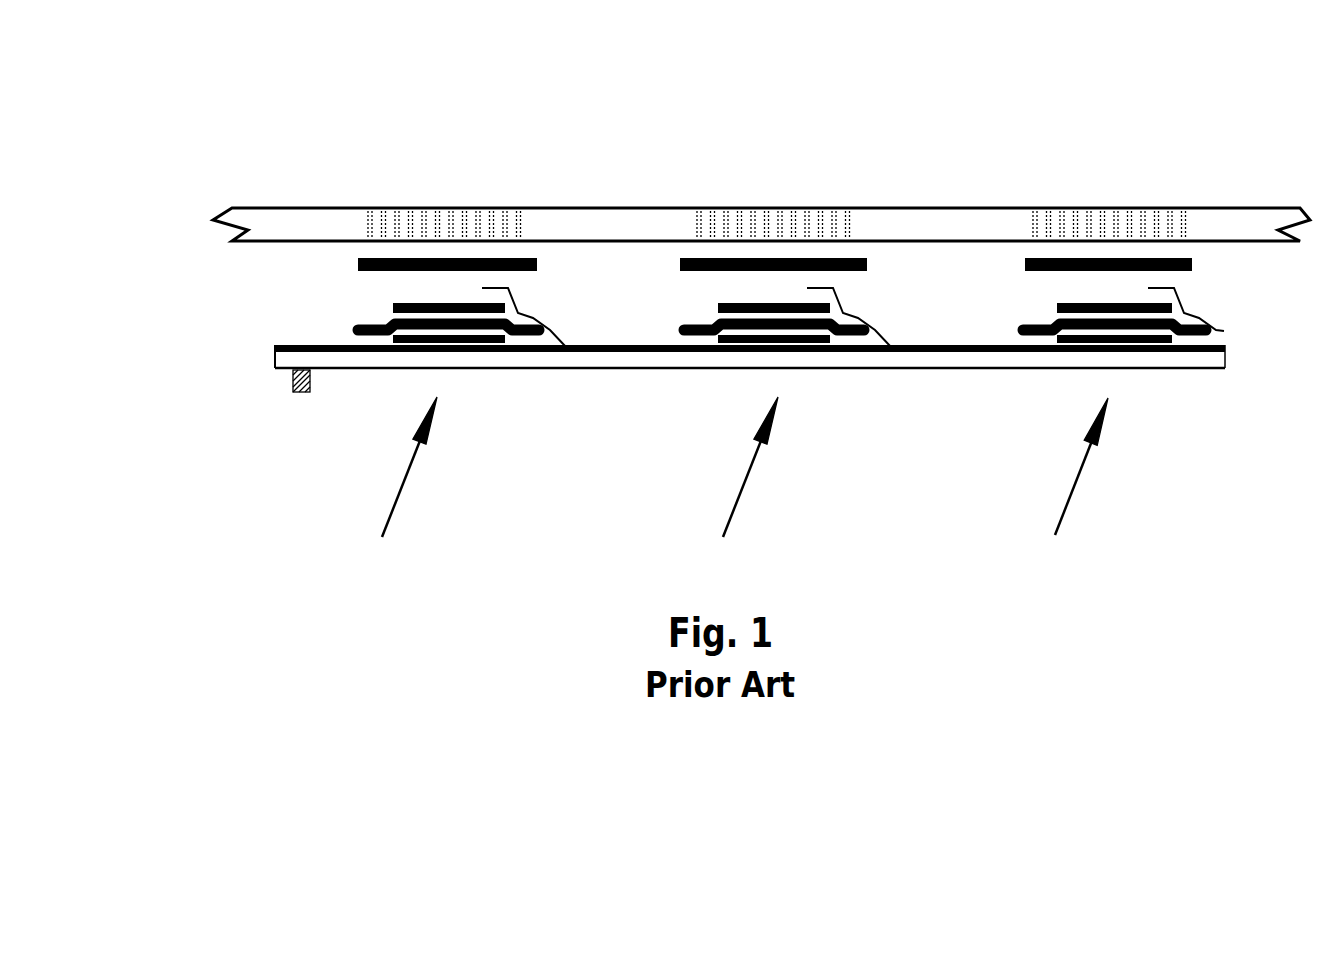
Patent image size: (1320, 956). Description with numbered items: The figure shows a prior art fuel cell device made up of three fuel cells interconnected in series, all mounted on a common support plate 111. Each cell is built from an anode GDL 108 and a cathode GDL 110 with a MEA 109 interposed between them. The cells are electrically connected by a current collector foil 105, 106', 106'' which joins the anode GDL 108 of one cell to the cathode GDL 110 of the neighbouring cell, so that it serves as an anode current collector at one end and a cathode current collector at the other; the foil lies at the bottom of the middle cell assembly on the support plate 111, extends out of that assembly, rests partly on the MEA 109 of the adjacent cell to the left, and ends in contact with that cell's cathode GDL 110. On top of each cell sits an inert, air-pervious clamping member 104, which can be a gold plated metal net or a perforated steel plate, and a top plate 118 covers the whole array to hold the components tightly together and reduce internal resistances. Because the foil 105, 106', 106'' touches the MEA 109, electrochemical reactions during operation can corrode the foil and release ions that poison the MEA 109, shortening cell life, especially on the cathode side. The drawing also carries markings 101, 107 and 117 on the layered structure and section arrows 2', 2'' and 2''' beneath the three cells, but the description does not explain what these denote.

The contact pad 101 is at (300, 390).
The clamping member 104 is at (528, 260).
The current collector foil 105 is at (1225, 350).
The current collector foil 106' is at (560, 428).
The current collector foil 106'' is at (911, 428).
The substrate 107 is at (297, 345).
The anode GDL 108 is at (411, 340).
The MEA 109 is at (358, 323).
The cathode GDL 110 is at (397, 305).
The support plate 111 is at (635, 365).
The spacer structure 117 is at (768, 217).
The top plate 118 is at (930, 220).
The section view arrow 2' is at (404, 487).
The section view arrow 2'' is at (744, 487).
The section view arrow 2''' is at (1075, 487).